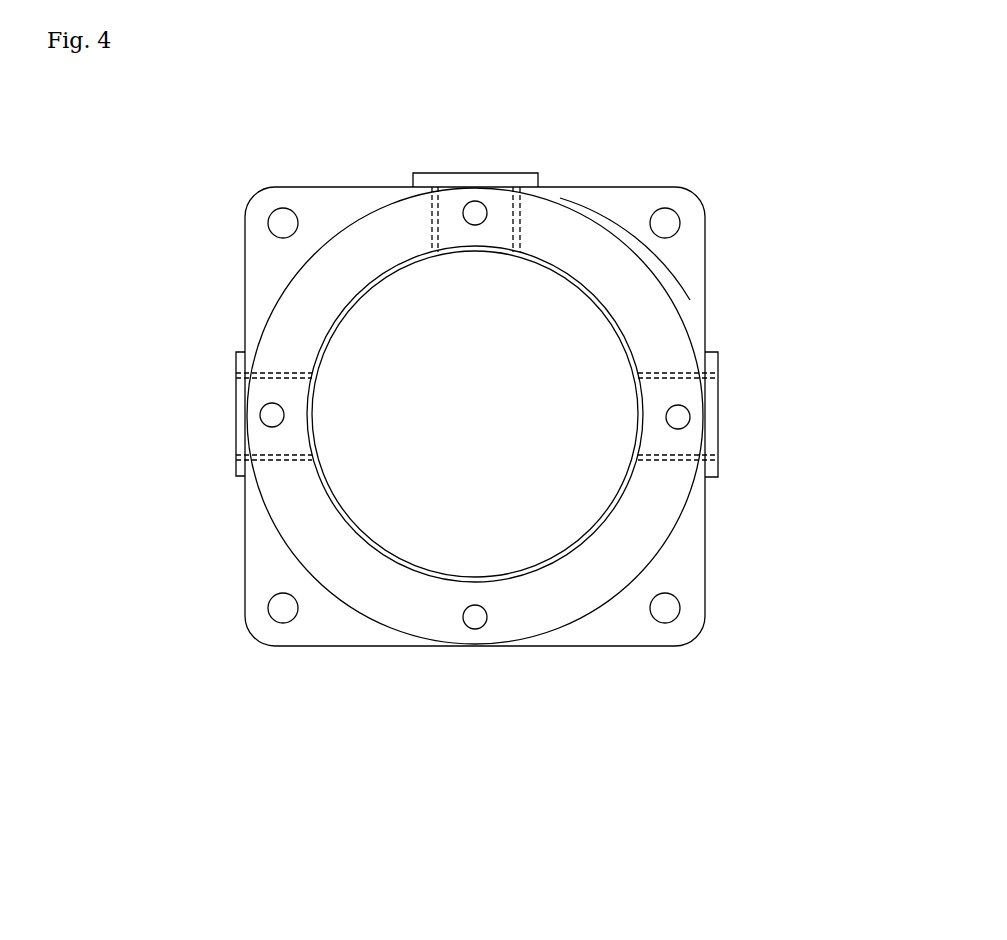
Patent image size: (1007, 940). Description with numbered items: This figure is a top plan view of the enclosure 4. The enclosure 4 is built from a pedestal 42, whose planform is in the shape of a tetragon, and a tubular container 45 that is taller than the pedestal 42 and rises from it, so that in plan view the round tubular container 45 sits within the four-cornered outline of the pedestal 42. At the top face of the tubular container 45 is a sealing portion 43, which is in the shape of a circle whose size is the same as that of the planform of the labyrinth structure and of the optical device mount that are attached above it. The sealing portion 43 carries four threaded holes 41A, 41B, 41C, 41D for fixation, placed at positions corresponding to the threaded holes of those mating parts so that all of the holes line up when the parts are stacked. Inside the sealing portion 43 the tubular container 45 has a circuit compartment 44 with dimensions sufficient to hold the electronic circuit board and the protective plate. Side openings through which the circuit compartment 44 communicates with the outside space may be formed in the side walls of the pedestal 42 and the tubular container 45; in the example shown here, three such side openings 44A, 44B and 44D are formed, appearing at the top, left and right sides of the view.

The enclosure 4 is at (198, 190).
The threaded hole 41A is at (480, 210).
The threaded hole 41B is at (268, 418).
The threaded hole 41C is at (473, 622).
The threaded hole 41D is at (685, 422).
The pedestal 42 is at (690, 268).
The sealing portion 43 is at (648, 527).
The circuit compartment 44 is at (543, 533).
The side opening 44A is at (455, 173).
The side opening 44B is at (237, 395).
The side opening 44D is at (722, 392).
The tubular container 45 is at (600, 222).